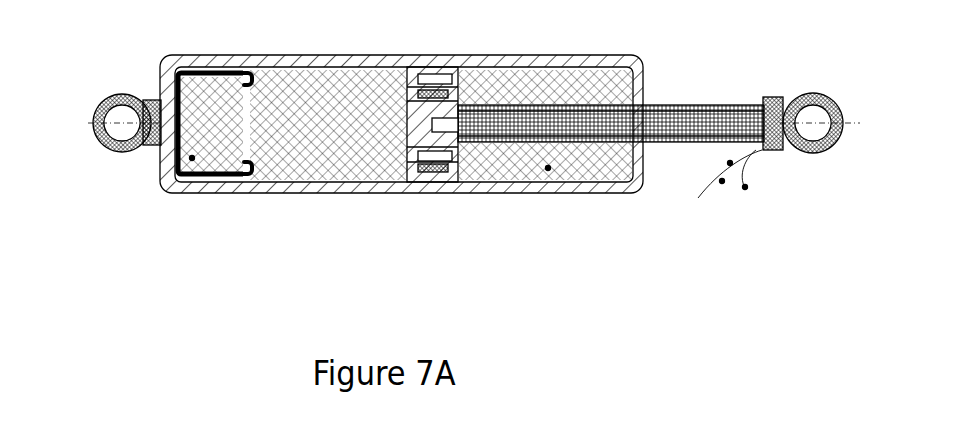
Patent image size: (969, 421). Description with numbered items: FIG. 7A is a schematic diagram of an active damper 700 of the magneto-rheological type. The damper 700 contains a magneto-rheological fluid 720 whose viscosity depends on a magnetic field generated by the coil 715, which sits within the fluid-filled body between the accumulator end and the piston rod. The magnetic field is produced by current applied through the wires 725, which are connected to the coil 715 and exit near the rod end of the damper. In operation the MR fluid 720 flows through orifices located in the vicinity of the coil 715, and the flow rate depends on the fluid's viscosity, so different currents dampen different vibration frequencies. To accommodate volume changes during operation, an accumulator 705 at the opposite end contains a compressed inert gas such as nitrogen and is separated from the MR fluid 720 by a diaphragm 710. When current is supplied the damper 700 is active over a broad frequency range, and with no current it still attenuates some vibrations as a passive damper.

The damper 700 is at (405, 35).
The accumulator 705 is at (165, 178).
The diaphragm 710 is at (251, 183).
The coil 715 is at (410, 190).
The magneto-rheological fluid 720 is at (531, 193).
The wires 725 is at (723, 182).